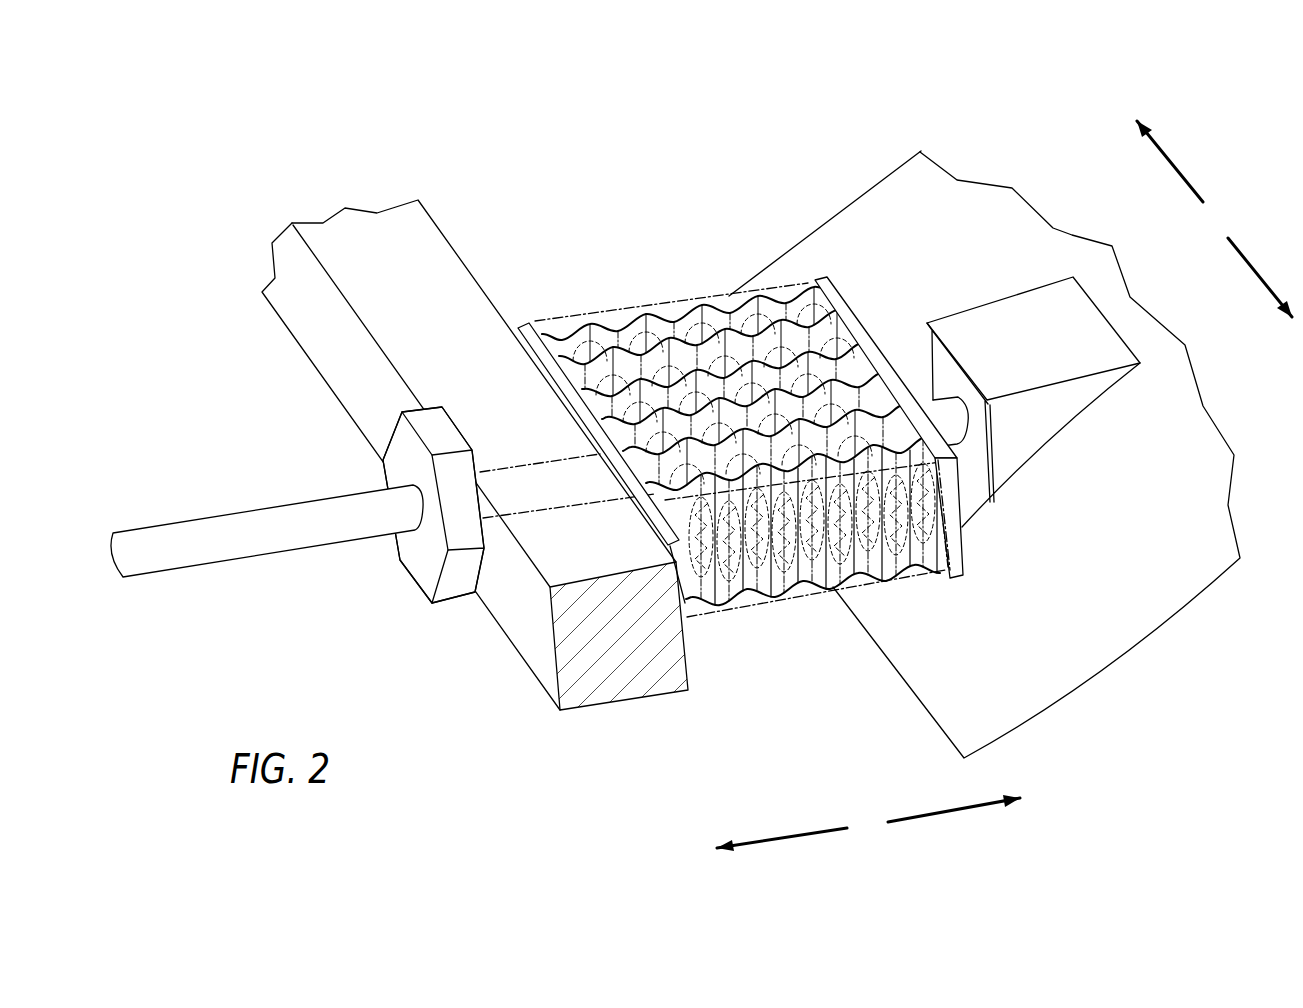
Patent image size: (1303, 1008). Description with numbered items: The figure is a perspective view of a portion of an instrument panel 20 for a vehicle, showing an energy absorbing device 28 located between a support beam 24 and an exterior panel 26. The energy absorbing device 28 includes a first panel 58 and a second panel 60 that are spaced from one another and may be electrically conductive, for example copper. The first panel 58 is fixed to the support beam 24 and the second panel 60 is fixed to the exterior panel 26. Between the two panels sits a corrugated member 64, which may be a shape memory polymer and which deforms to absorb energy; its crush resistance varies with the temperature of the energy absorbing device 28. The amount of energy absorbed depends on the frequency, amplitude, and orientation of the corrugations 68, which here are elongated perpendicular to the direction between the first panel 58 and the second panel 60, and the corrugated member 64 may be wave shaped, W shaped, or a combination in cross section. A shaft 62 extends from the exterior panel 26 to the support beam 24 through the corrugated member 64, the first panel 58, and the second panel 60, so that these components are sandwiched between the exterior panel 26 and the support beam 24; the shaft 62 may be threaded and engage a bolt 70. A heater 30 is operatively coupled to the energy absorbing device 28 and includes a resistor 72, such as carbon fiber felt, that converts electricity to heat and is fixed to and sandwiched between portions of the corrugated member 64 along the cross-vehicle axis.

The instrument panel 20 is at (982, 111).
The support beam 24 is at (427, 256).
The exterior panel 26 is at (905, 202).
The energy absorbing device 28 is at (773, 633).
The heater 30 is at (889, 608).
The first panel 58 is at (521, 322).
The second panel 60 is at (823, 277).
The shaft 62 is at (225, 528).
The corrugated member 64 is at (706, 605).
The corrugations 68 is at (810, 585).
The bolt 70 is at (420, 570).
The resistor 72 is at (855, 598).